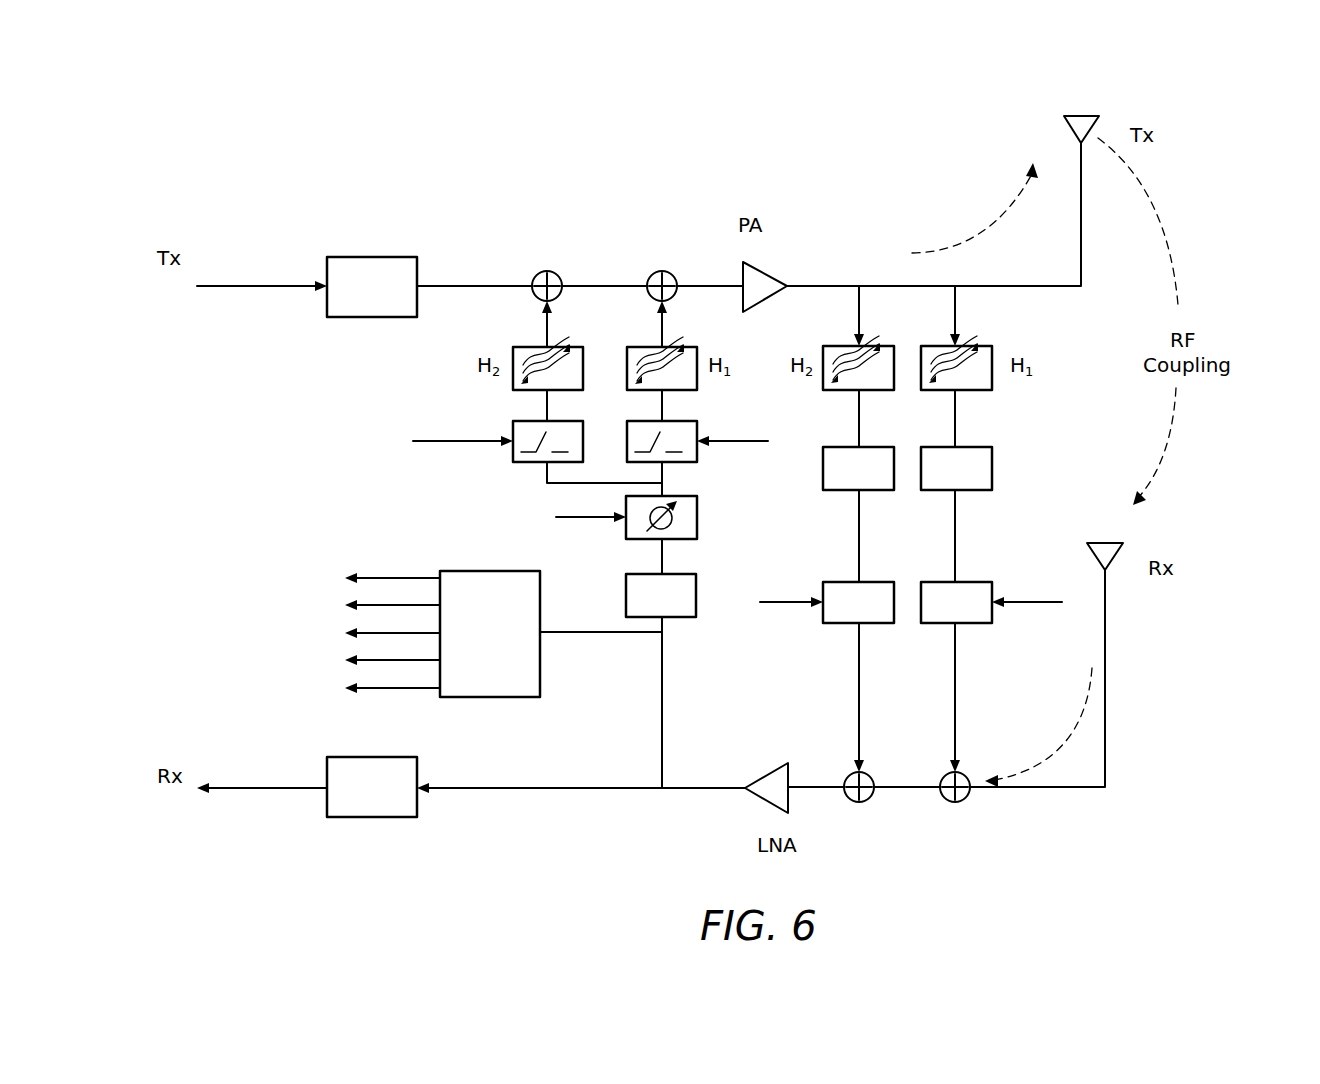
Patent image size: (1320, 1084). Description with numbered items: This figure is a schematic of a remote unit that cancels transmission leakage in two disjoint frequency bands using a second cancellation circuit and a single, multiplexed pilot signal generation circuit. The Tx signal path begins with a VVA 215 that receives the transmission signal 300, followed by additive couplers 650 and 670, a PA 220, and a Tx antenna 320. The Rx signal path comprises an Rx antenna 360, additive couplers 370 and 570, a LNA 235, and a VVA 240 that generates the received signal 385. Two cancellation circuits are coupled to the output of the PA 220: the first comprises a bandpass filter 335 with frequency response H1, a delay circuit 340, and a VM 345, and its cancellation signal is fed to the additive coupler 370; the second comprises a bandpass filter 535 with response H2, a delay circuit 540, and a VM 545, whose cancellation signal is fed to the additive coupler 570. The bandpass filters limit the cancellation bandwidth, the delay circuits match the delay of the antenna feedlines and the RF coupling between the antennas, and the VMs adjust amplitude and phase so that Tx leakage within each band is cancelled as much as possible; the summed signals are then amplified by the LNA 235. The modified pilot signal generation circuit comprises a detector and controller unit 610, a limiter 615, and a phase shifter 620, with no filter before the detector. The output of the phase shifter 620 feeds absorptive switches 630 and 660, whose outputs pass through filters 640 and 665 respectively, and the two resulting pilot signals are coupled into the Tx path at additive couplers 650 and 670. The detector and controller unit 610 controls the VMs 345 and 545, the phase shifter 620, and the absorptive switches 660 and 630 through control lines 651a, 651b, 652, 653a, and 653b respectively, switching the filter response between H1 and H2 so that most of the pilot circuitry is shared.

The transmission signal 300 is at (262, 286).
The VVA 215 is at (372, 257).
The additive coupler 650 is at (547, 271).
The additive coupler 670 is at (662, 271).
The PA 220 is at (760, 272).
The Tx antenna 320 is at (1098, 115).
The bandpass filter 535 is at (873, 347).
The bandpass filter 335 is at (992, 383).
The delay circuit 540 is at (875, 447).
The delay circuit 340 is at (992, 463).
The VM 545 is at (873, 582).
The VM 345 is at (992, 599).
The Rx antenna 360 is at (1122, 545).
The additive coupler 570 is at (866, 800).
The additive coupler 370 is at (962, 800).
The LNA 235 is at (758, 800).
The VVA 240 is at (370, 817).
The received signal 385 is at (260, 788).
The detector and controller unit 610 is at (487, 571).
The limiter 615 is at (697, 608).
The phase shifter 620 is at (697, 517).
The absorptive switch 630 is at (513, 460).
The absorptive switch 660 is at (697, 462).
The filter 640 is at (513, 380).
The filter 665 is at (697, 382).
The control line 651a is at (397, 578).
The control line 651b is at (397, 605).
The control line 652 is at (397, 633).
The control line 653a is at (397, 660).
The control line 653b is at (397, 688).